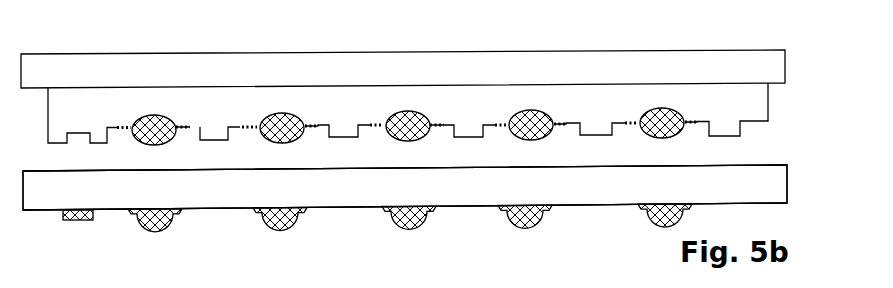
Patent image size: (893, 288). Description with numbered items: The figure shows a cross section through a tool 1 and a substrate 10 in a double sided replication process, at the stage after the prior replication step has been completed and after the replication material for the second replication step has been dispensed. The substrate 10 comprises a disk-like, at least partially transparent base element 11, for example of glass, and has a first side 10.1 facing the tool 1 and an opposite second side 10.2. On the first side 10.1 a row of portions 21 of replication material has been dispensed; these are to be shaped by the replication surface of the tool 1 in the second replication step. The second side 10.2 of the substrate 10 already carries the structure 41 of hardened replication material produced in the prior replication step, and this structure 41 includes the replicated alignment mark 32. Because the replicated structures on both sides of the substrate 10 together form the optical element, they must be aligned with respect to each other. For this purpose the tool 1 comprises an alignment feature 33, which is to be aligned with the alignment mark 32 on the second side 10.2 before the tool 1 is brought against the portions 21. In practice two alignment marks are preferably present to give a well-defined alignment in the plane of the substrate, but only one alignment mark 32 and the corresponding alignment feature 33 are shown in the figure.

The tool 1 is at (350, 38).
The substrate 10 is at (602, 218).
The first side 10.1 is at (585, 158).
The second side 10.2 is at (364, 218).
The base element 11 is at (467, 187).
The portions of replication material 21 is at (415, 120).
The alignment mark 32 is at (95, 220).
The alignment feature 33 is at (82, 137).
The structure of hardened replication material 41 is at (168, 224).